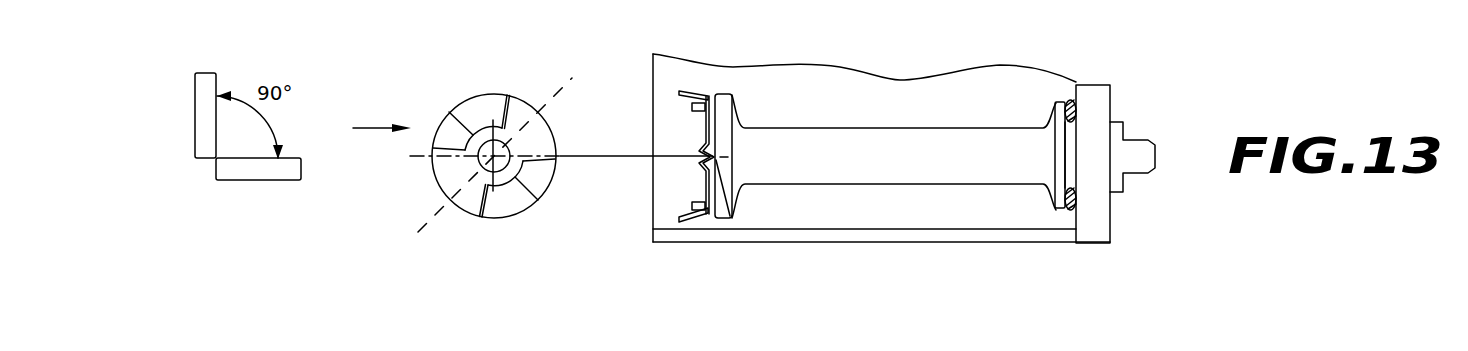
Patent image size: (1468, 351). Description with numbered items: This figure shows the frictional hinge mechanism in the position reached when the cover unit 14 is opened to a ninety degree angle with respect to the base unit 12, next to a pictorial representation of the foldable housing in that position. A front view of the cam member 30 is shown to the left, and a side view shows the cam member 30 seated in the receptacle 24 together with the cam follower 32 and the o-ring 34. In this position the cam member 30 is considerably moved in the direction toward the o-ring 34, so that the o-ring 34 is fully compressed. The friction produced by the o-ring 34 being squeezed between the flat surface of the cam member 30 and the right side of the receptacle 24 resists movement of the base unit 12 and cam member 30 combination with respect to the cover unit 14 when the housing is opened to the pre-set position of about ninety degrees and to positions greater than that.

The base unit 12 is at (267, 180).
The cover unit 14 is at (195, 103).
The receptacle 24 is at (893, 102).
The cam member 30 is at (523, 97).
The cam follower 32 is at (690, 88).
The o-ring 34 is at (1069, 100).